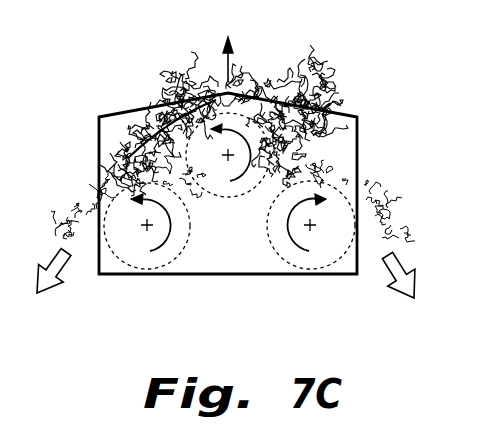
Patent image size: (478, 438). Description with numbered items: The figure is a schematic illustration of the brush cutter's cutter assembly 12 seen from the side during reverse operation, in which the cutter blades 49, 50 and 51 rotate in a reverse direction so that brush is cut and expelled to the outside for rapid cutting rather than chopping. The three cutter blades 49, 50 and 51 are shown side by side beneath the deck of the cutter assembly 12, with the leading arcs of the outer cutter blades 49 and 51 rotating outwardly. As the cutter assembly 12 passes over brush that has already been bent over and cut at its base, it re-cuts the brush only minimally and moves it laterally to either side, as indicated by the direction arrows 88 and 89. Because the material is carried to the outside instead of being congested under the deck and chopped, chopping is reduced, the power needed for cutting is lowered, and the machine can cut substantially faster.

The cutter assembly 12 is at (366, 138).
The cutter blade 49 is at (183, 277).
The cutter blade 50 is at (235, 198).
The cutter blade 51 is at (340, 277).
The direction arrow 88 is at (57, 265).
The direction arrow 89 is at (397, 262).